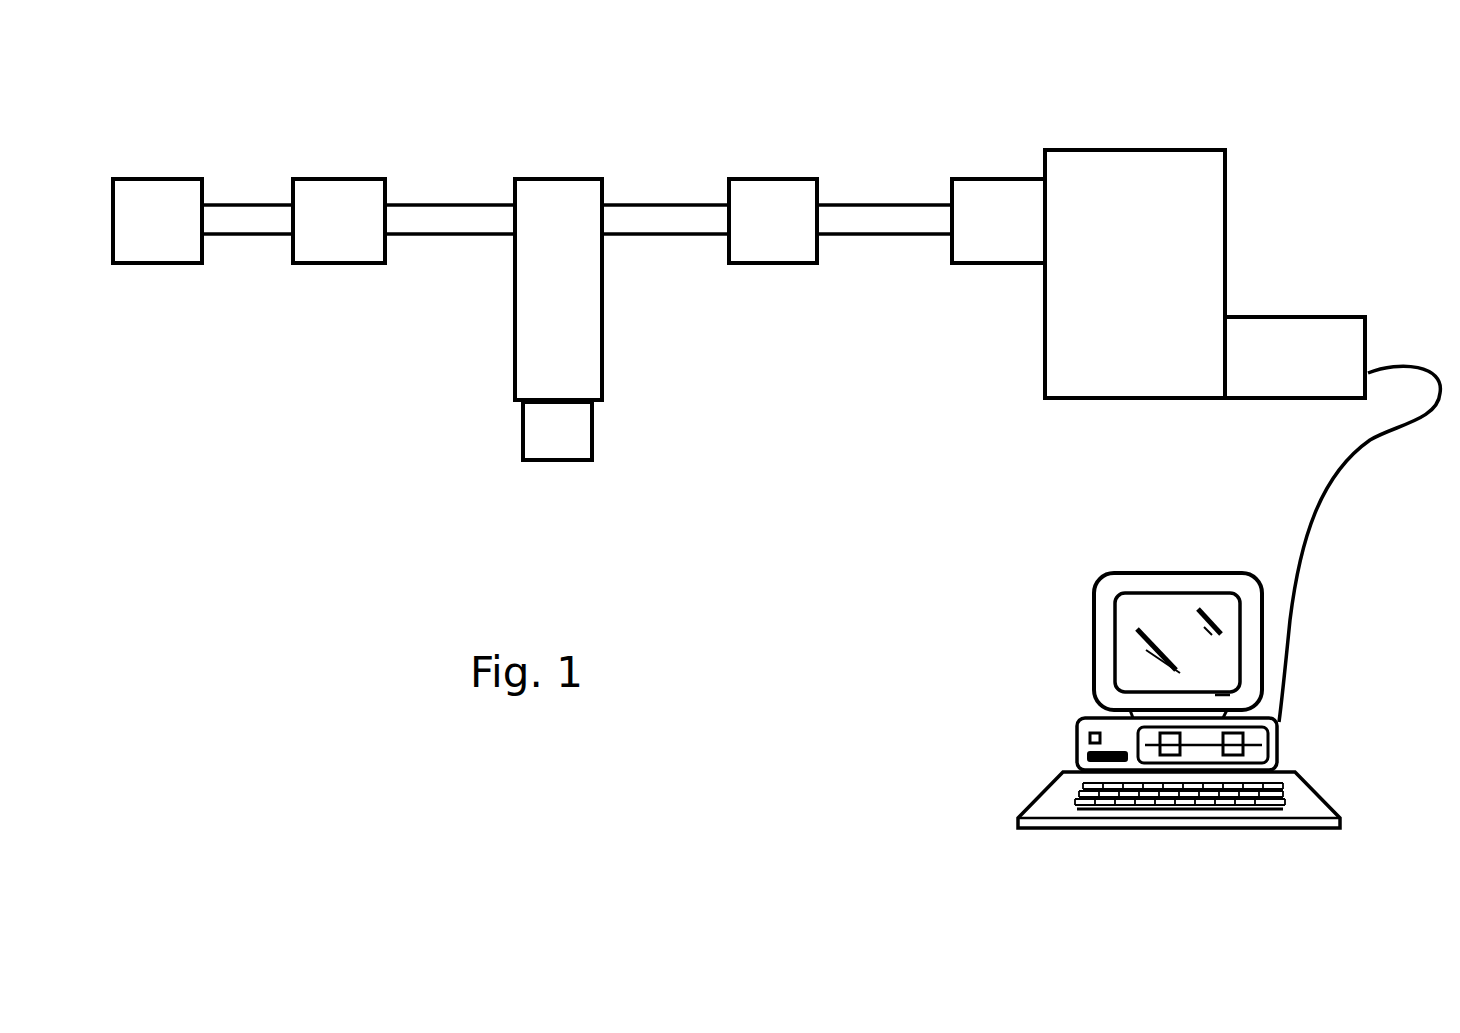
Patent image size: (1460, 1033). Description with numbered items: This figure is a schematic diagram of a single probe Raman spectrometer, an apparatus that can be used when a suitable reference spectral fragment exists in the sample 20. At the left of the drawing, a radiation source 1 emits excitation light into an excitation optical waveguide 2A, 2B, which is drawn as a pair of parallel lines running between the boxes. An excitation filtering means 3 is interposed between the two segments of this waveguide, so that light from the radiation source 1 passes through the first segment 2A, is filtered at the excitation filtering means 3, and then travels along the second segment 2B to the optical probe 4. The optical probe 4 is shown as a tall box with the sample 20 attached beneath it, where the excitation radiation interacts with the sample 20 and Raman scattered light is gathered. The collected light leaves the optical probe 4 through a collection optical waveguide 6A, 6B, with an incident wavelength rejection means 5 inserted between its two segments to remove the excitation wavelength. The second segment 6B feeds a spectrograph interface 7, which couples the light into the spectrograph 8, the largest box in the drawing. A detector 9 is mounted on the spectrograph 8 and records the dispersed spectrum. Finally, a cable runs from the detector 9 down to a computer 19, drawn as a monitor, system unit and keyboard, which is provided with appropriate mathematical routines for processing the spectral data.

The radiation source 1 is at (167, 245).
The excitation optical waveguide 2A is at (240, 220).
The excitation optical waveguide 2B is at (447, 217).
The excitation filtering means 3 is at (320, 243).
The optical probe 4 is at (560, 227).
The sample 20 is at (562, 428).
The collection optical waveguide 6A is at (658, 218).
The incident wavelength rejection means 5 is at (760, 243).
The collection optical waveguide 6B is at (880, 223).
The spectrograph interface 7 is at (1003, 202).
The spectrograph 8 is at (1205, 208).
The detector 9 is at (1313, 348).
The computer 19 is at (1077, 723).